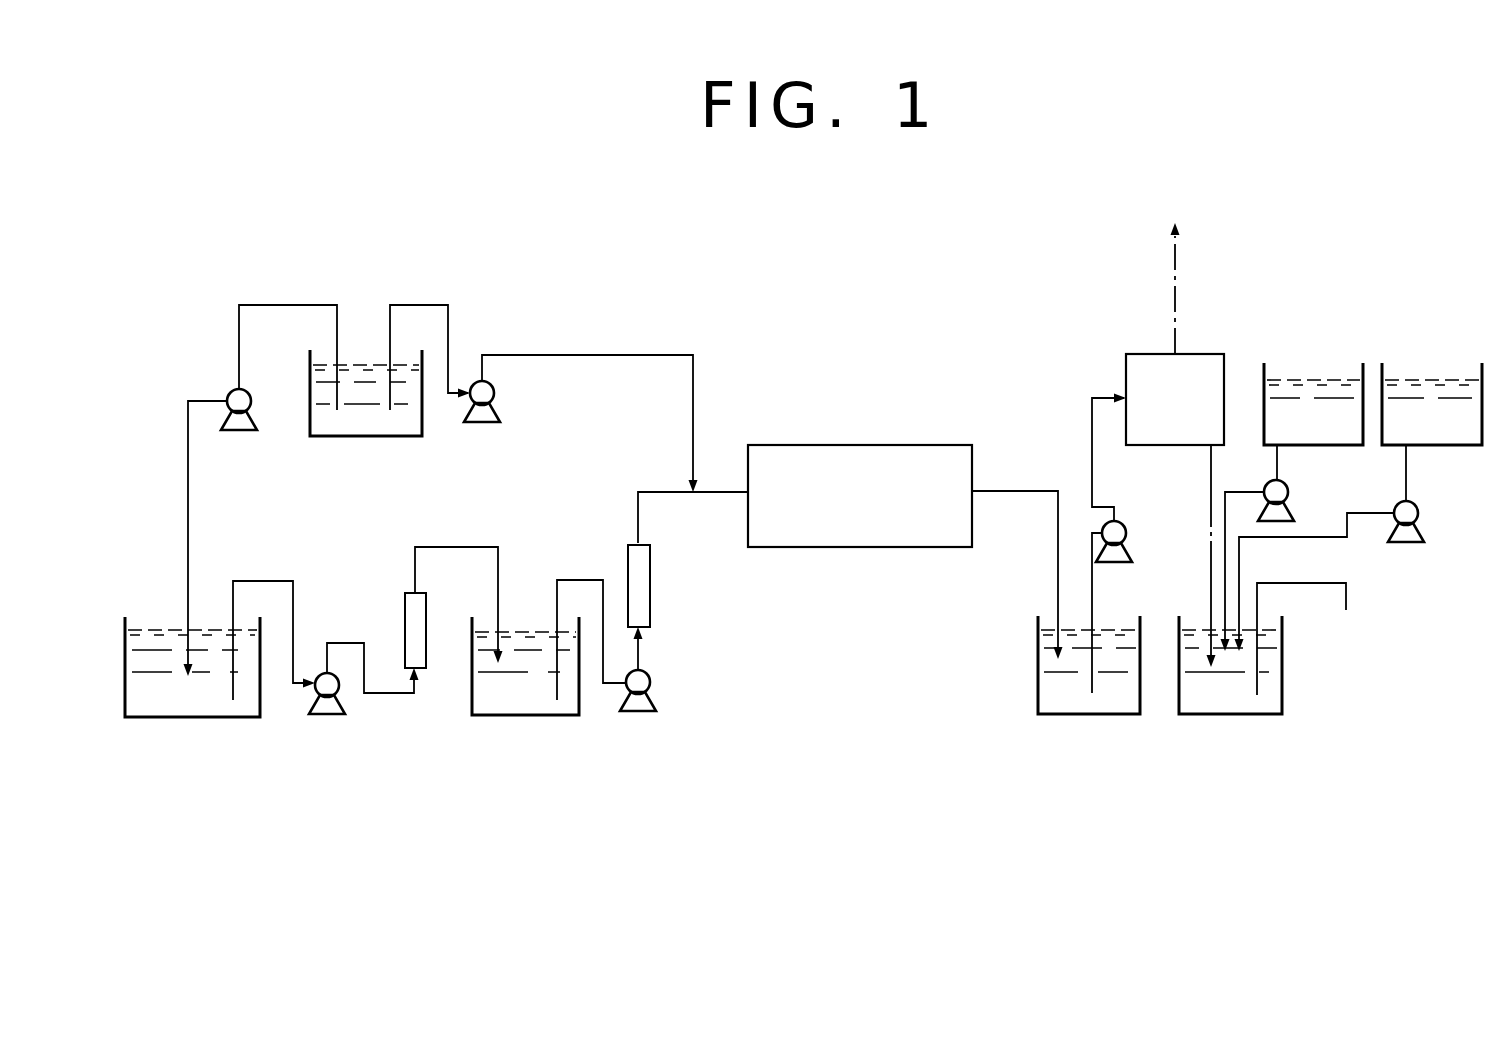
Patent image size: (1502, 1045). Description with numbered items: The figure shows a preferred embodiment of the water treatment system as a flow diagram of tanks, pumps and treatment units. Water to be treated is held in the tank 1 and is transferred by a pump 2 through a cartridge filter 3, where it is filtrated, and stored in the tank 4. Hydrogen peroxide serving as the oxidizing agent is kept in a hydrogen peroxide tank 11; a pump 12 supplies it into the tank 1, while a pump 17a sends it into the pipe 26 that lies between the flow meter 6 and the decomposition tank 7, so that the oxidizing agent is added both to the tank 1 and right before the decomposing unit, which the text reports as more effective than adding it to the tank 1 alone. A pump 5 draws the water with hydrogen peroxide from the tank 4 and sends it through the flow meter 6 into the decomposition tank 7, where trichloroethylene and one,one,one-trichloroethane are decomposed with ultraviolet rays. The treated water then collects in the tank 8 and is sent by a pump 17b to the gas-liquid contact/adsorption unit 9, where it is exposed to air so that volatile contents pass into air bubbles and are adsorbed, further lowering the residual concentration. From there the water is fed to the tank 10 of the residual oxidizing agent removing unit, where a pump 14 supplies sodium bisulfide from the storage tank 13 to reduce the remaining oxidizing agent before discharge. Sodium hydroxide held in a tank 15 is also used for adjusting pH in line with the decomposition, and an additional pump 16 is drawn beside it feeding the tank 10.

The tank 1 is at (188, 718).
The pump 2 is at (328, 713).
The cartridge filter 3 is at (427, 662).
The tank 4 is at (530, 717).
The pump 5 is at (640, 713).
The flow meter 6 is at (650, 602).
The decomposition tank 7 is at (867, 548).
The tank 8 is at (1080, 715).
The gas-liquid contact/adsorption unit 9 is at (1170, 447).
The tank 10 is at (1219, 715).
The hydrogen peroxide tank 11 is at (352, 437).
The pump 12 is at (239, 432).
The storage tank 13 is at (1318, 446).
The pump 14 is at (1290, 493).
The tank 15 is at (1443, 446).
The pump 16 is at (1420, 513).
The pump 17a is at (480, 430).
The pump 17b is at (1133, 550).
The pipe 26 is at (675, 495).